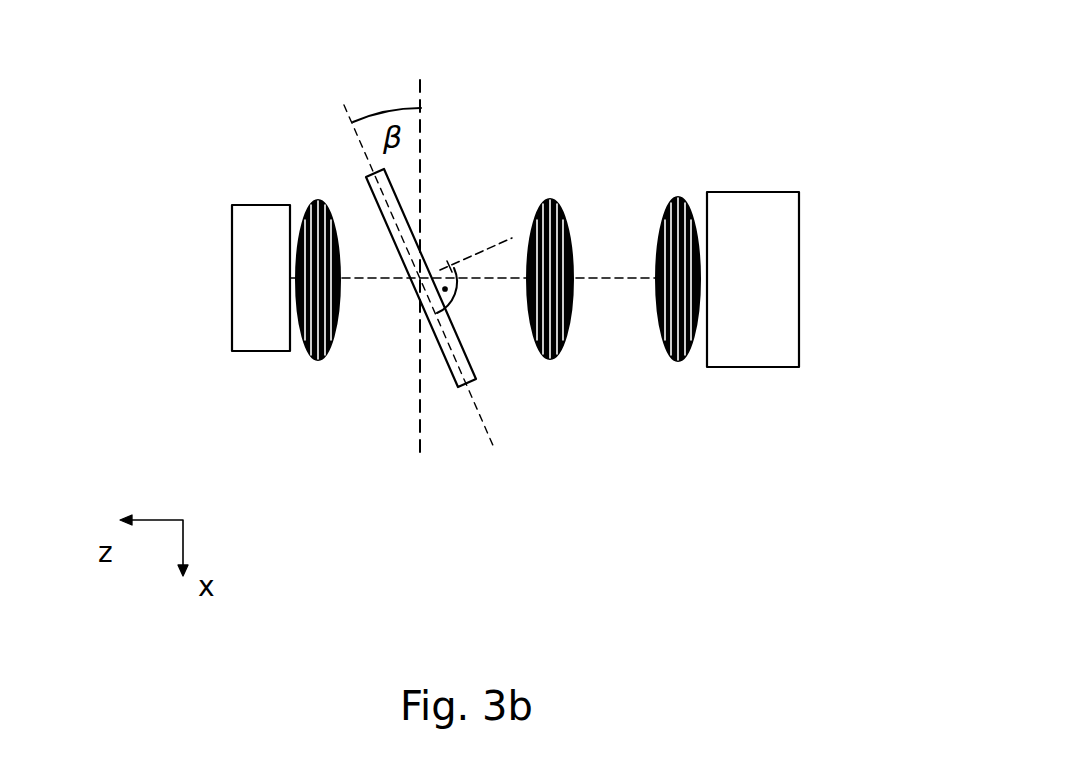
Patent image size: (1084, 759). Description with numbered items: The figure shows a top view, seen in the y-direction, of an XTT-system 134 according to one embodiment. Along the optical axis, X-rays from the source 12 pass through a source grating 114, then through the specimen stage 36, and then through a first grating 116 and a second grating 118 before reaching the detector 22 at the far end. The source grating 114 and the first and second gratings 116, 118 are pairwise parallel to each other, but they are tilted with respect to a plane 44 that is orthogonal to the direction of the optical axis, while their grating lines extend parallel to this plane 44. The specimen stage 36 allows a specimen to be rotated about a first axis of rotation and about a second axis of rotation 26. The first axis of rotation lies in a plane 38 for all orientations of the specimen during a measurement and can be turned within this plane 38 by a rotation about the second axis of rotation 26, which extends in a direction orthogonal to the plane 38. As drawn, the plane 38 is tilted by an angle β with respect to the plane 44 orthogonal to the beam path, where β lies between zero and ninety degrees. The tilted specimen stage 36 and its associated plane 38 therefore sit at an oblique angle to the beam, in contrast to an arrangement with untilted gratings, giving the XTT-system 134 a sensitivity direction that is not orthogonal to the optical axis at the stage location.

The source 12 is at (250, 204).
The source grating 114 is at (316, 205).
The first grating 116 is at (558, 203).
The second grating 118 is at (680, 198).
The detector 22 is at (799, 243).
The specimen stage 36 is at (462, 140).
The plane 38 is at (483, 427).
The plane orthogonal to the optical axis 44 is at (418, 425).
The second axis of rotation 26 is at (489, 236).
The XTT-system 134 is at (628, 56).